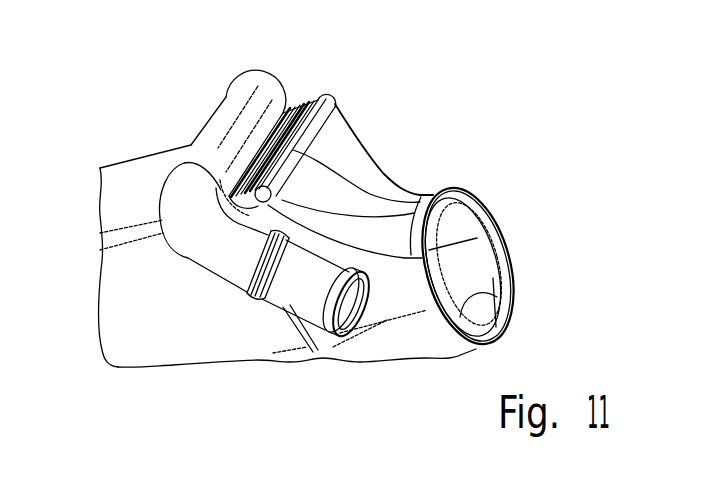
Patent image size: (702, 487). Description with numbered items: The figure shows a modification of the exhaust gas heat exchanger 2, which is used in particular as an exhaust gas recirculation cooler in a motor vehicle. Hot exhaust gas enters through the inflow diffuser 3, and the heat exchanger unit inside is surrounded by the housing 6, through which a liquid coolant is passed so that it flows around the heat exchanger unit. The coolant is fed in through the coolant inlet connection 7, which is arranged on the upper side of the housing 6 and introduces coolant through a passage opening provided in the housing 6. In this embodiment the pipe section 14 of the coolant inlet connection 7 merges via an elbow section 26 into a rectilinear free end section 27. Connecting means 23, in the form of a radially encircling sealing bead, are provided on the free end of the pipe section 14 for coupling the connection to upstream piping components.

The exhaust gas heat exchanger 2 is at (345, 177).
The inflow diffuser 3 is at (387, 177).
The housing 6 is at (113, 172).
The coolant inlet connection 7 is at (193, 112).
The pipe section 14 is at (230, 107).
The connecting means 23 is at (323, 330).
The elbow section 26 is at (187, 253).
The rectilinear free end section 27 is at (285, 303).